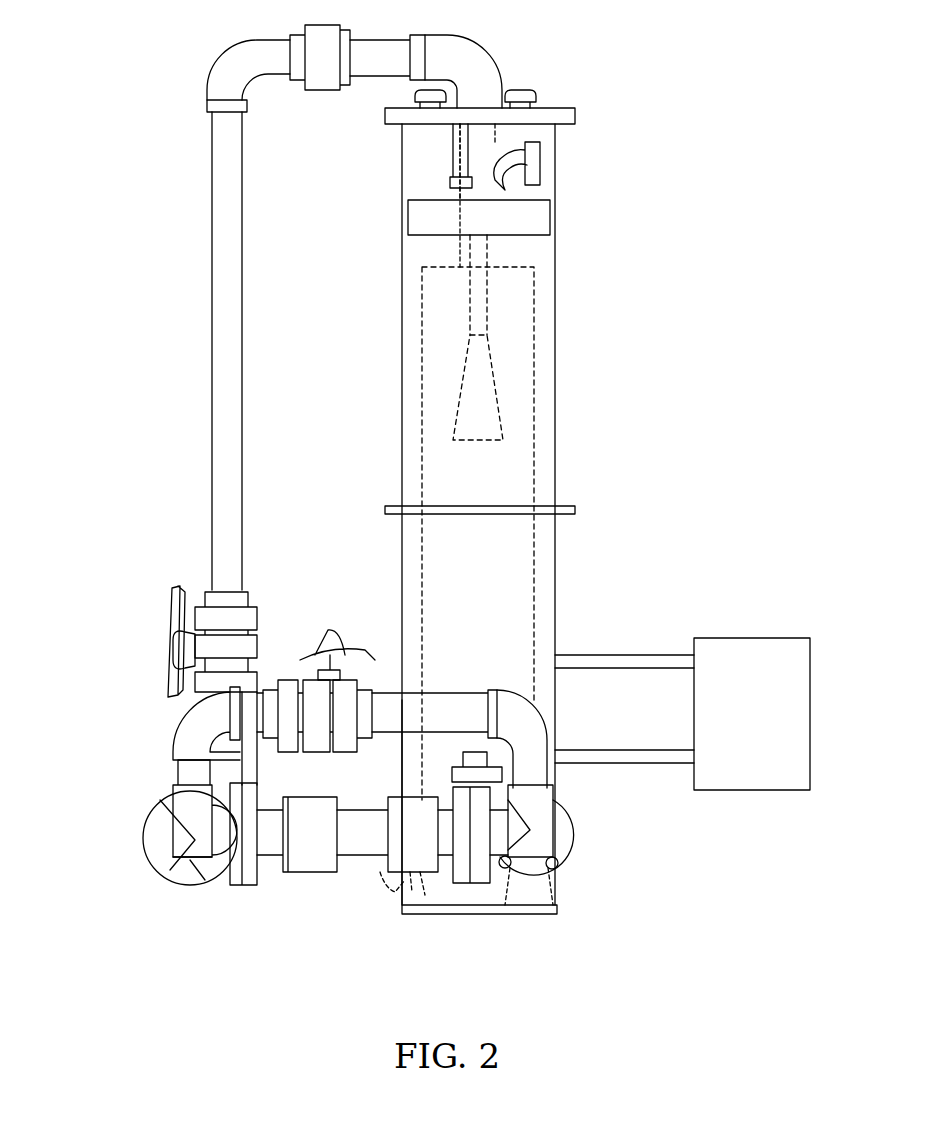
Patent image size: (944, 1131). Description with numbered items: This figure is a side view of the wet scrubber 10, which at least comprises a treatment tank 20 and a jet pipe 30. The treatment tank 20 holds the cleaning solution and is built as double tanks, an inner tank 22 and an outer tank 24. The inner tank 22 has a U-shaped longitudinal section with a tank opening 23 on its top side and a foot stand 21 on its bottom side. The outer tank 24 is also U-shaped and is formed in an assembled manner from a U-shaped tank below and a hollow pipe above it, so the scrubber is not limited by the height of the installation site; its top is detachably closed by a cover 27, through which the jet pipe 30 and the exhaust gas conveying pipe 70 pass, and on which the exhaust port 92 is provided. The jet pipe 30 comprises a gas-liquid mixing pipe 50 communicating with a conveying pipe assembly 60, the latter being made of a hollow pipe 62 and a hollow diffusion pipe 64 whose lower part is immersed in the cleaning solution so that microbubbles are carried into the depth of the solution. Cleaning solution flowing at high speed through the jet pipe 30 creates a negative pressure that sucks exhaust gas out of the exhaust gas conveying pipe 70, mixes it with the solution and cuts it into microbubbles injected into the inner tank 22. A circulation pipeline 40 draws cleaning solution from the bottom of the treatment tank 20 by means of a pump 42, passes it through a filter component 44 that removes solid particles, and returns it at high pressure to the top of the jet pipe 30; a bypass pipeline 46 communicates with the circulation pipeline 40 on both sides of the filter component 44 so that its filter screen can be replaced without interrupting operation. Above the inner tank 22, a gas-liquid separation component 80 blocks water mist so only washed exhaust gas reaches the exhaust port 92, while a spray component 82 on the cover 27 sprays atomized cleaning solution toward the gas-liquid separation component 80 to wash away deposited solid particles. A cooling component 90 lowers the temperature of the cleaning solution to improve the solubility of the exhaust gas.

The wet scrubber 10 is at (148, 96).
The treatment tank 20 is at (539, 519).
The foot stand 21 is at (560, 905).
The inner tank 22 is at (540, 492).
The tank opening 23 is at (445, 268).
The outer tank 24 is at (513, 728).
The cover 27 is at (570, 108).
The jet pipe 30 is at (604, 337).
The circulation pipeline 40 is at (225, 535).
The pump 42 is at (150, 848).
The filter component 44 is at (375, 830).
The bypass pipeline 46 is at (440, 705).
The gas-liquid mixing pipe 50 is at (490, 205).
The conveying pipe assembly 60 is at (569, 337).
The hollow pipe 62 is at (478, 312).
The hollow diffusion pipe 64 is at (480, 403).
The exhaust gas conveying pipe 70 is at (530, 160).
The gas-liquid separation component 80 is at (535, 218).
The spray component 82 is at (425, 165).
The cooling component 90 is at (760, 648).
The exhaust port 92 is at (410, 96).